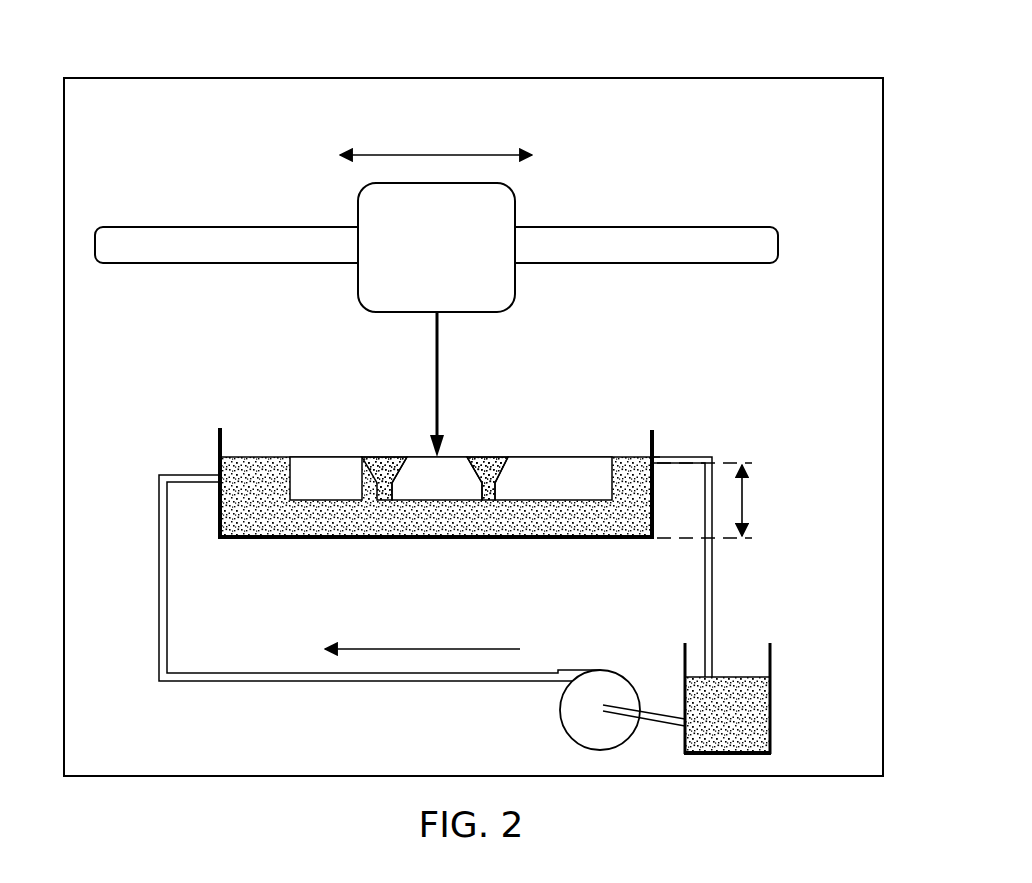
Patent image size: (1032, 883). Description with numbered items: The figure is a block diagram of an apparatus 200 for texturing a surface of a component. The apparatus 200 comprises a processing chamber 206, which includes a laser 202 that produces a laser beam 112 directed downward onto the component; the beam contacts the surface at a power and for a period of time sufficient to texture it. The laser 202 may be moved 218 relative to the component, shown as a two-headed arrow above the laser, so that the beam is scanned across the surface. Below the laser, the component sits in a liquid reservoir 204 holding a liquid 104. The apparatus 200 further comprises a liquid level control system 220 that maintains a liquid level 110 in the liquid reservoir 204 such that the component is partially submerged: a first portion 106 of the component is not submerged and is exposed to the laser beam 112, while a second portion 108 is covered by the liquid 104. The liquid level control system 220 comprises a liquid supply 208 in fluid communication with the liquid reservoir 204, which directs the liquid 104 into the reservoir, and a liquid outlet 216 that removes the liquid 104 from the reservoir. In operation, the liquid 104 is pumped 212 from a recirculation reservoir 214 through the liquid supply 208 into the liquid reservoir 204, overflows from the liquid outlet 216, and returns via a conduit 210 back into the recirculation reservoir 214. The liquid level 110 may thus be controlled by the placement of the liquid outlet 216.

The apparatus 200 is at (768, 49).
The laser 202 is at (419, 255).
The liquid reservoir 204 is at (461, 575).
The processing chamber 206 is at (698, 160).
The liquid supply 208 is at (158, 562).
The conduit 210 is at (714, 573).
The pump 212 is at (572, 716).
The recirculation reservoir 214 is at (772, 700).
The liquid outlet 216 is at (655, 455).
The movement of the laser 218 is at (437, 153).
The liquid level control system 220 is at (765, 614).
The liquid 104 is at (632, 478).
The first portion 106 is at (456, 455).
The second portion 108 is at (377, 456).
The liquid level 110 is at (745, 500).
The laser beam 112 is at (440, 373).